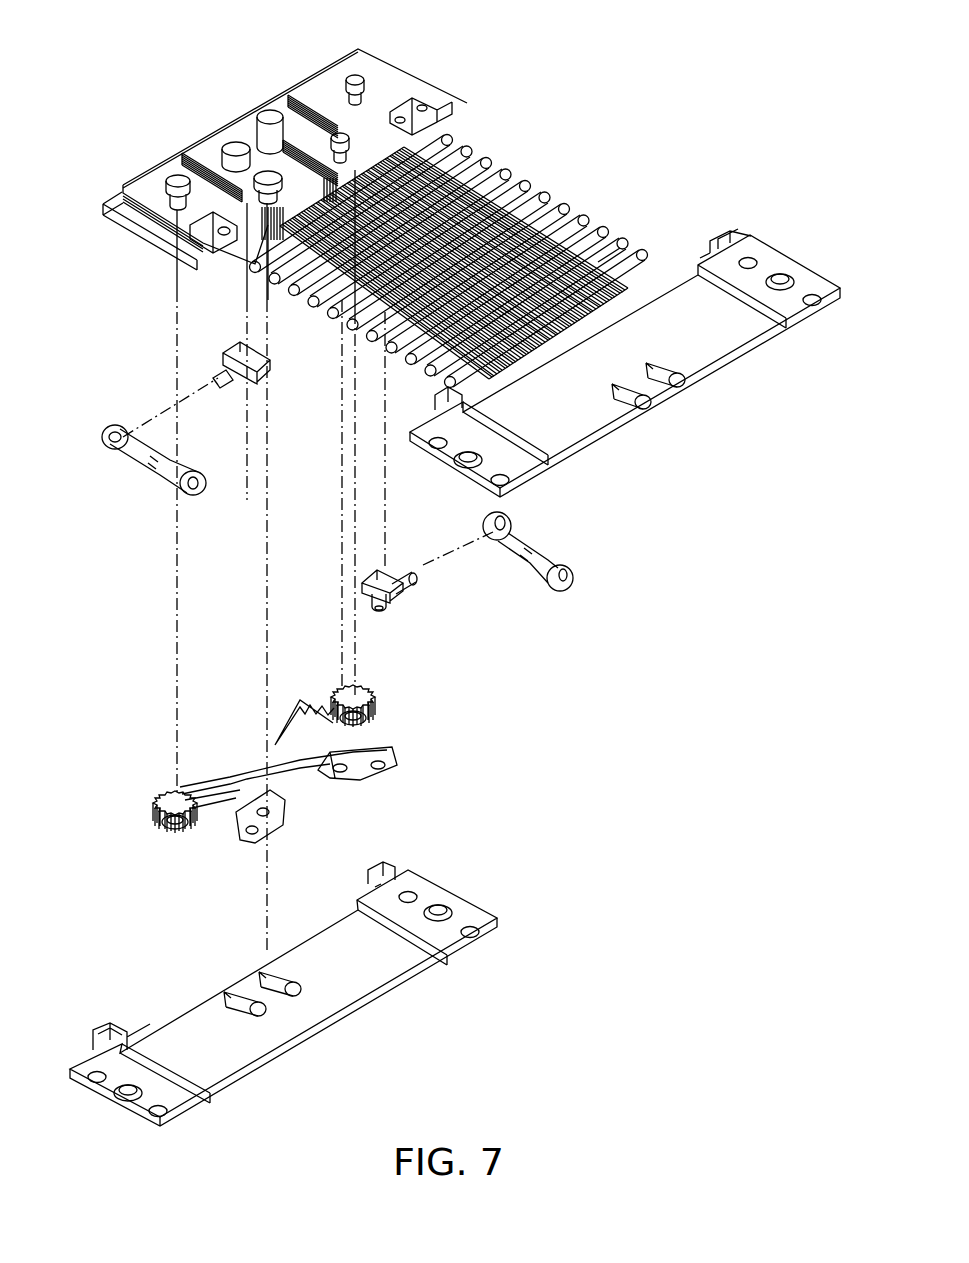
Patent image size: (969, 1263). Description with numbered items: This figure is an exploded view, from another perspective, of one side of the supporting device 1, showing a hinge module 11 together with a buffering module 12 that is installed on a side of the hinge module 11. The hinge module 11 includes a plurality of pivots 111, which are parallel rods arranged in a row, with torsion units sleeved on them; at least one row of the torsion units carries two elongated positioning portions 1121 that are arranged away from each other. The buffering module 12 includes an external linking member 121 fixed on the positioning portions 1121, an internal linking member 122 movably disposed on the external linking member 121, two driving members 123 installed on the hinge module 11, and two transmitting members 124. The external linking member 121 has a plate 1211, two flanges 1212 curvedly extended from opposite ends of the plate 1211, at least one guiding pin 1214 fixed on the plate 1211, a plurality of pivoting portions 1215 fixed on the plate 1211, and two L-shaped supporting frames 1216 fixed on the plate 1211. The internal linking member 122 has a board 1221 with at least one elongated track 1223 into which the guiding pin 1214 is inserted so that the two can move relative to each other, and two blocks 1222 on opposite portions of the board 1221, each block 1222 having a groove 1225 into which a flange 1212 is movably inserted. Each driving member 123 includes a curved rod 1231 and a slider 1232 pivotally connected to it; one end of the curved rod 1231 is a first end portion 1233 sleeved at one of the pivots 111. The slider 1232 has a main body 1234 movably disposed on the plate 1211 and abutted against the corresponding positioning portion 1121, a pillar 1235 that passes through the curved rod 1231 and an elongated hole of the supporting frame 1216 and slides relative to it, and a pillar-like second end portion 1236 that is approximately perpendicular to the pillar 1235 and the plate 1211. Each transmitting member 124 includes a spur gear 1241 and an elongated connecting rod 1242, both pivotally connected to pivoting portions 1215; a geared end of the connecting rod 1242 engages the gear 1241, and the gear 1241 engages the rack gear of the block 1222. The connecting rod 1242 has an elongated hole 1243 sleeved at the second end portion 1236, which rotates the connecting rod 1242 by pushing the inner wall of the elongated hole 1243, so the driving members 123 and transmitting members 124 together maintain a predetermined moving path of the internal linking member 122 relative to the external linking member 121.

The supporting device 1 is at (847, 44).
The hinge module 11 is at (533, 177).
The pivots 111 is at (513, 167).
The buffering module 12 is at (788, 248).
The external linking member 121 is at (150, 243).
The plate 1211 is at (150, 174).
The flanges 1212 is at (133, 222).
The positioning portions 1121 is at (153, 180).
The guiding pin 1214 is at (268, 127).
The pivoting portions 1215 is at (342, 157).
The supporting frames 1216 is at (432, 110).
The first end portion 1233 is at (598, 260).
The driving member 123 is at (535, 678).
The curved rod 1231 is at (153, 473).
The slider 1232 is at (237, 387).
The main body 1234 is at (365, 573).
The pillar 1235 is at (400, 572).
The second end portion 1236 is at (372, 596).
The transmitting member 124 is at (255, 918).
The gear 1241 is at (157, 827).
The connecting rod 1242 is at (247, 840).
The elongated hole 1243 is at (380, 773).
The internal linking member 122 is at (452, 890).
The board 1221 is at (363, 987).
The blocks 1222 is at (104, 1032).
The elongated track 1223 is at (292, 997).
The groove 1225 is at (108, 1030).